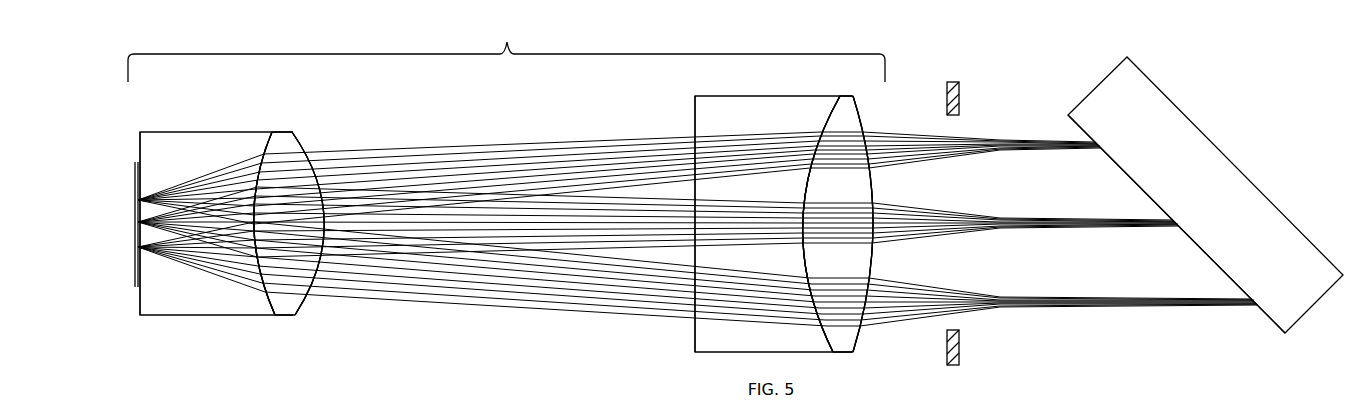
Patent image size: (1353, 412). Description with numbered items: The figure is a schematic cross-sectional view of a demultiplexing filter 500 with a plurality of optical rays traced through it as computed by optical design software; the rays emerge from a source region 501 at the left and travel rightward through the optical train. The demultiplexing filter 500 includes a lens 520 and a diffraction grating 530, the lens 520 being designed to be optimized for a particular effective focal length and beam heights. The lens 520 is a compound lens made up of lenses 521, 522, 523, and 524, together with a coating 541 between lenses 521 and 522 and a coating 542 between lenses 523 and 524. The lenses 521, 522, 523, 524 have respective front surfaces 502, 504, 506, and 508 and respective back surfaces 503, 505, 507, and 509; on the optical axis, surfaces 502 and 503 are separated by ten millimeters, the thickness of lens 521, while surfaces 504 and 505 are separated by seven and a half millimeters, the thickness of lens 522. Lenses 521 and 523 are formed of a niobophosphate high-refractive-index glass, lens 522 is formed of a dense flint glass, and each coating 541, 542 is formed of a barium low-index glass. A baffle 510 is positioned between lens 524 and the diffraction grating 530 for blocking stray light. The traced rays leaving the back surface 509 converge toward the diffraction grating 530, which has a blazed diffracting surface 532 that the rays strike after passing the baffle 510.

The demultiplexing filter 500 is at (1256, 40).
The light source 501 is at (125, 277).
The front surface of lens 521 502 is at (132, 148).
The back surface of lens 521 503 is at (252, 152).
The front surface of lens 522 504 is at (247, 208).
The back surface of lens 522 505 is at (312, 142).
The front surface of lens 523 506 is at (692, 122).
The back surface of lens 523 507 is at (822, 112).
The front surface of lens 524 508 is at (821, 224).
The back surface of lens 524 509 is at (866, 110).
The baffle 510 is at (953, 81).
The lens 520 is at (506, 48).
The lens 521 is at (177, 162).
The lens 522 is at (270, 160).
The lens 523 is at (723, 128).
The lens 524 is at (825, 193).
The diffraction grating 530 is at (1188, 202).
The blazed diffracting surface 532 is at (1126, 183).
The coating 541 is at (274, 128).
The coating 542 is at (840, 96).